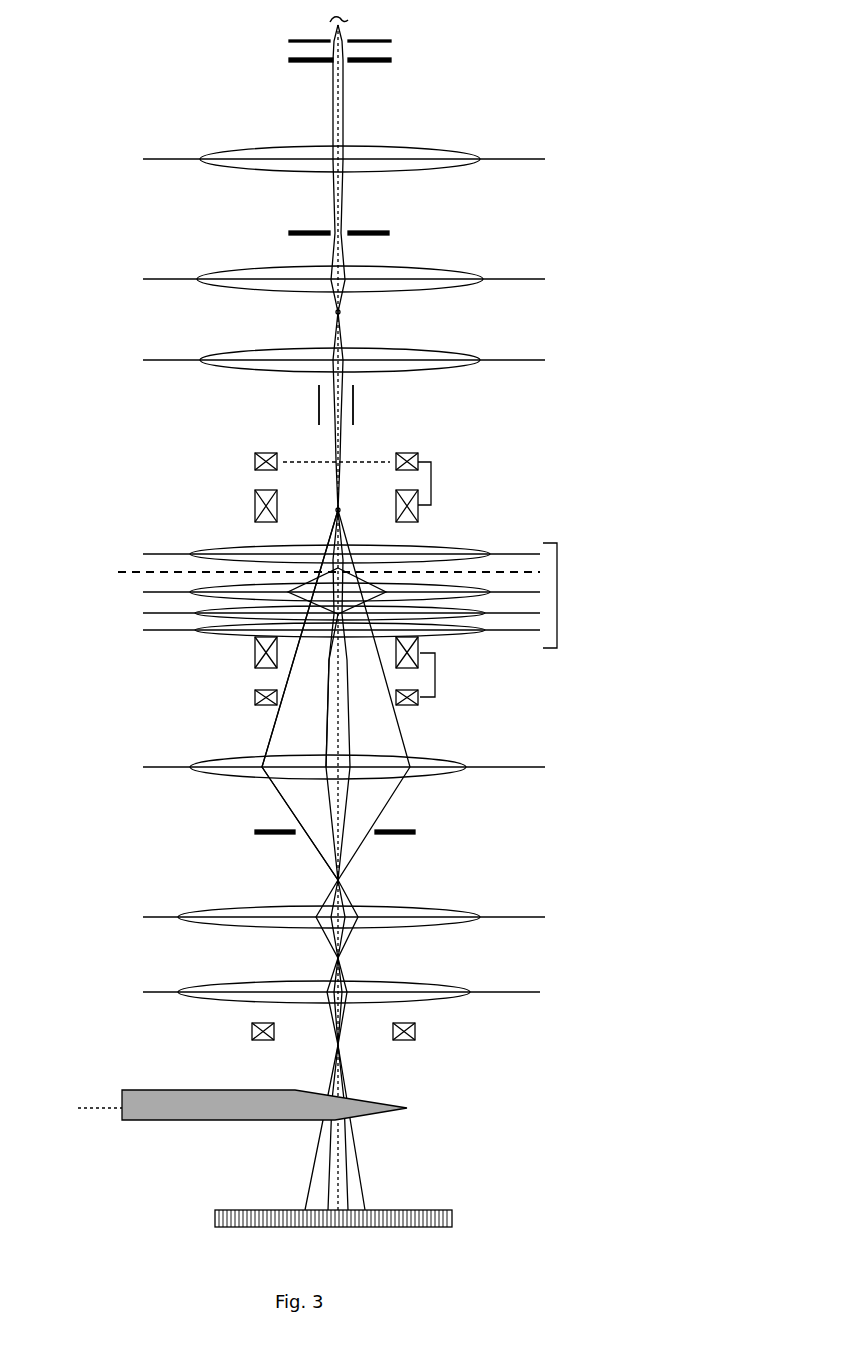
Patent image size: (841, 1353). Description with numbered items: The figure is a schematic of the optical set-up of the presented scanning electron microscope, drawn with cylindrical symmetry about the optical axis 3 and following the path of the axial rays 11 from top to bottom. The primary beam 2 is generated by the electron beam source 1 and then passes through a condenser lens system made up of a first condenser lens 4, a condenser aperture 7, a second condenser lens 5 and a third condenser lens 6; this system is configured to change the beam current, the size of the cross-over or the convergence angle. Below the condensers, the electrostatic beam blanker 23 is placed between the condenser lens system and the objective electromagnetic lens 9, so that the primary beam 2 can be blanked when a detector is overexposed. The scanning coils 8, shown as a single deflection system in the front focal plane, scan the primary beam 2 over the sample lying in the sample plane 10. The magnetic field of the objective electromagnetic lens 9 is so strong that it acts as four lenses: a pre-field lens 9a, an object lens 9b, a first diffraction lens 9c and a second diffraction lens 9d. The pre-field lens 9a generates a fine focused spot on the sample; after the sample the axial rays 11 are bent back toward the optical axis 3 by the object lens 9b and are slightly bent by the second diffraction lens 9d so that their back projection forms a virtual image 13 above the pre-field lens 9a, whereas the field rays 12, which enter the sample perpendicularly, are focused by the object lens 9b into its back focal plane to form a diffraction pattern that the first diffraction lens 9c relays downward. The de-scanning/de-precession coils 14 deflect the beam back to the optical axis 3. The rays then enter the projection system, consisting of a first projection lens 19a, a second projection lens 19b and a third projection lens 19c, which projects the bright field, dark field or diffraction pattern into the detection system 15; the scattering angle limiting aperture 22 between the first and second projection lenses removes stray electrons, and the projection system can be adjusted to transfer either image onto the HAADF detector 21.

The electron beam source 1 is at (348, 22).
The primary beam 2 is at (334, 85).
The optical axis 3 is at (334, 300).
The first condenser lens 4 is at (143, 159).
The second condenser lens 5 is at (143, 279).
The third condenser lens 6 is at (143, 360).
The condenser aperture 7 is at (389, 233).
The scanning coils 8 is at (431, 483).
The objective electromagnetic lens 9 is at (557, 590).
The pre-field lens 9a is at (143, 554).
The object lens 9b is at (143, 592).
The first diffraction lens 9c is at (143, 613).
The second diffraction lens 9d is at (143, 630).
The sample plane 10 is at (118, 572).
The axial rays 11 is at (324, 727).
The field rays 12 is at (278, 801).
The virtual image 13 is at (335, 508).
The de-scanning/de-precession coils 14 is at (435, 677).
The detection system 15 is at (452, 1212).
The first projection lens 19a is at (143, 767).
The second projection lens 19b is at (143, 917).
The third projection lens 19c is at (143, 992).
The HAADF detector 21 is at (380, 1116).
The scattering angle limiting aperture 22 is at (415, 832).
The electrostatic beam blanker 23 is at (353, 412).